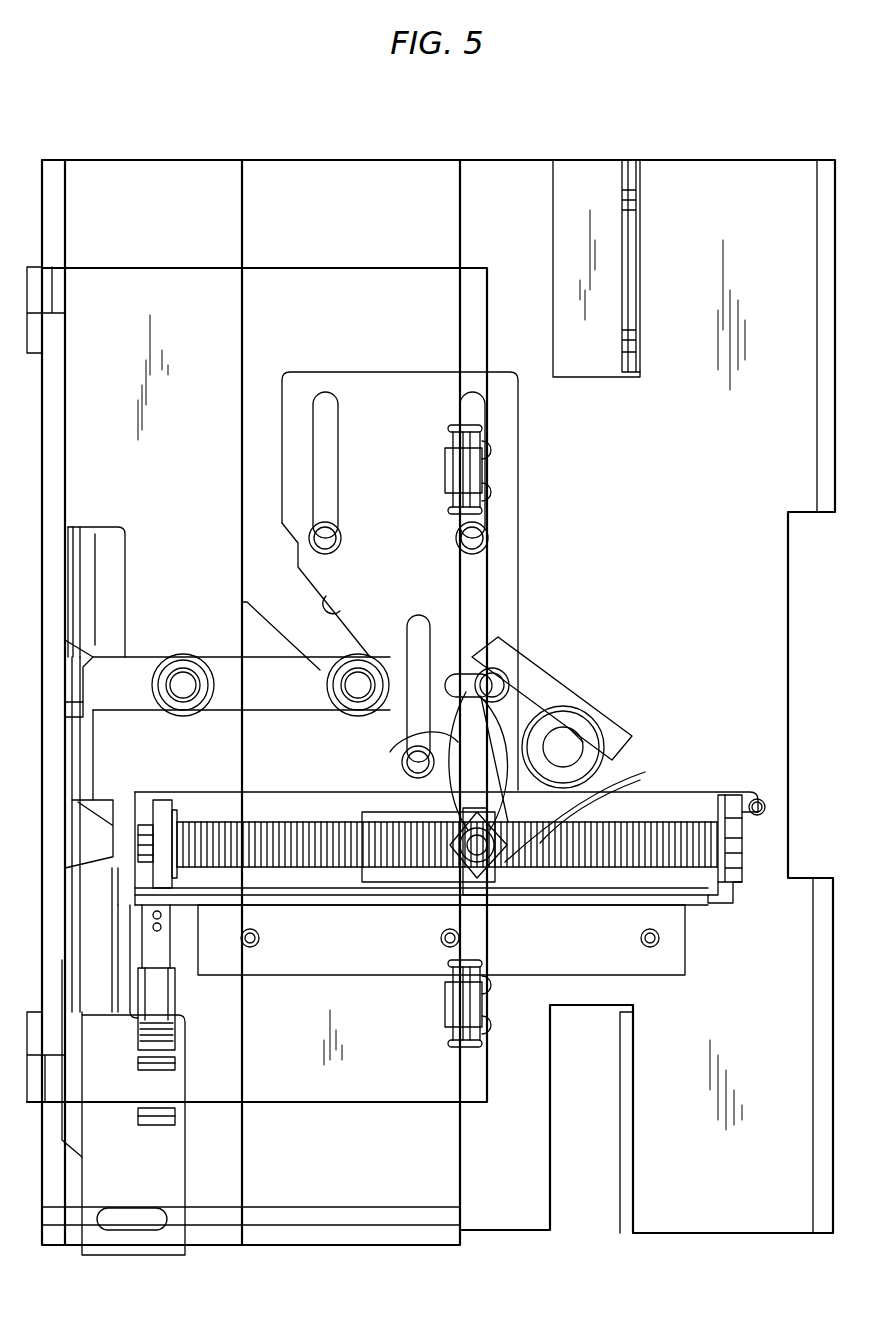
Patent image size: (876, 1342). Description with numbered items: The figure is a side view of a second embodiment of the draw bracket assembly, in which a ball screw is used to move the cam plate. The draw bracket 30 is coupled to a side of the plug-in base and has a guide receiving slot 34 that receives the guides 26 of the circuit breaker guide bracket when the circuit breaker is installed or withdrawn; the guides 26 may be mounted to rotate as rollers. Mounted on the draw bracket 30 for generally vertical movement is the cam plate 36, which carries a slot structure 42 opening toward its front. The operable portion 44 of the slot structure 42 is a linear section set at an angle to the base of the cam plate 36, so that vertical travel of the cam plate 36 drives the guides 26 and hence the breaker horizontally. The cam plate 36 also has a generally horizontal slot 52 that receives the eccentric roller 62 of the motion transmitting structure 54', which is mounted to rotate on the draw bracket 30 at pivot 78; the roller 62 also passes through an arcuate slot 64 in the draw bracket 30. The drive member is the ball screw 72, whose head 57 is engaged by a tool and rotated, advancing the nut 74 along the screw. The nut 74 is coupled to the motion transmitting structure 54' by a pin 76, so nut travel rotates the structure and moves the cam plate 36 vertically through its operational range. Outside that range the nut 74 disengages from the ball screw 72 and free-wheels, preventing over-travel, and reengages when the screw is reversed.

The draw bracket 30 is at (431, 707).
The guide receiving slot 34 is at (137, 660).
The cam plate 36 is at (518, 532).
The slot structure 42 is at (260, 610).
The operable portion 44 is at (340, 610).
The guides 26 is at (345, 718).
The horizontal slot 52 is at (448, 678).
The motion transmitting structure 54' is at (569, 698).
The head 57 is at (142, 797).
The eccentric roller 62 is at (494, 684).
The arcuate slot 64 is at (400, 746).
The ball screw 72 is at (308, 866).
The nut 74 is at (475, 888).
The pin 76 is at (645, 772).
The pivot 78 is at (578, 750).